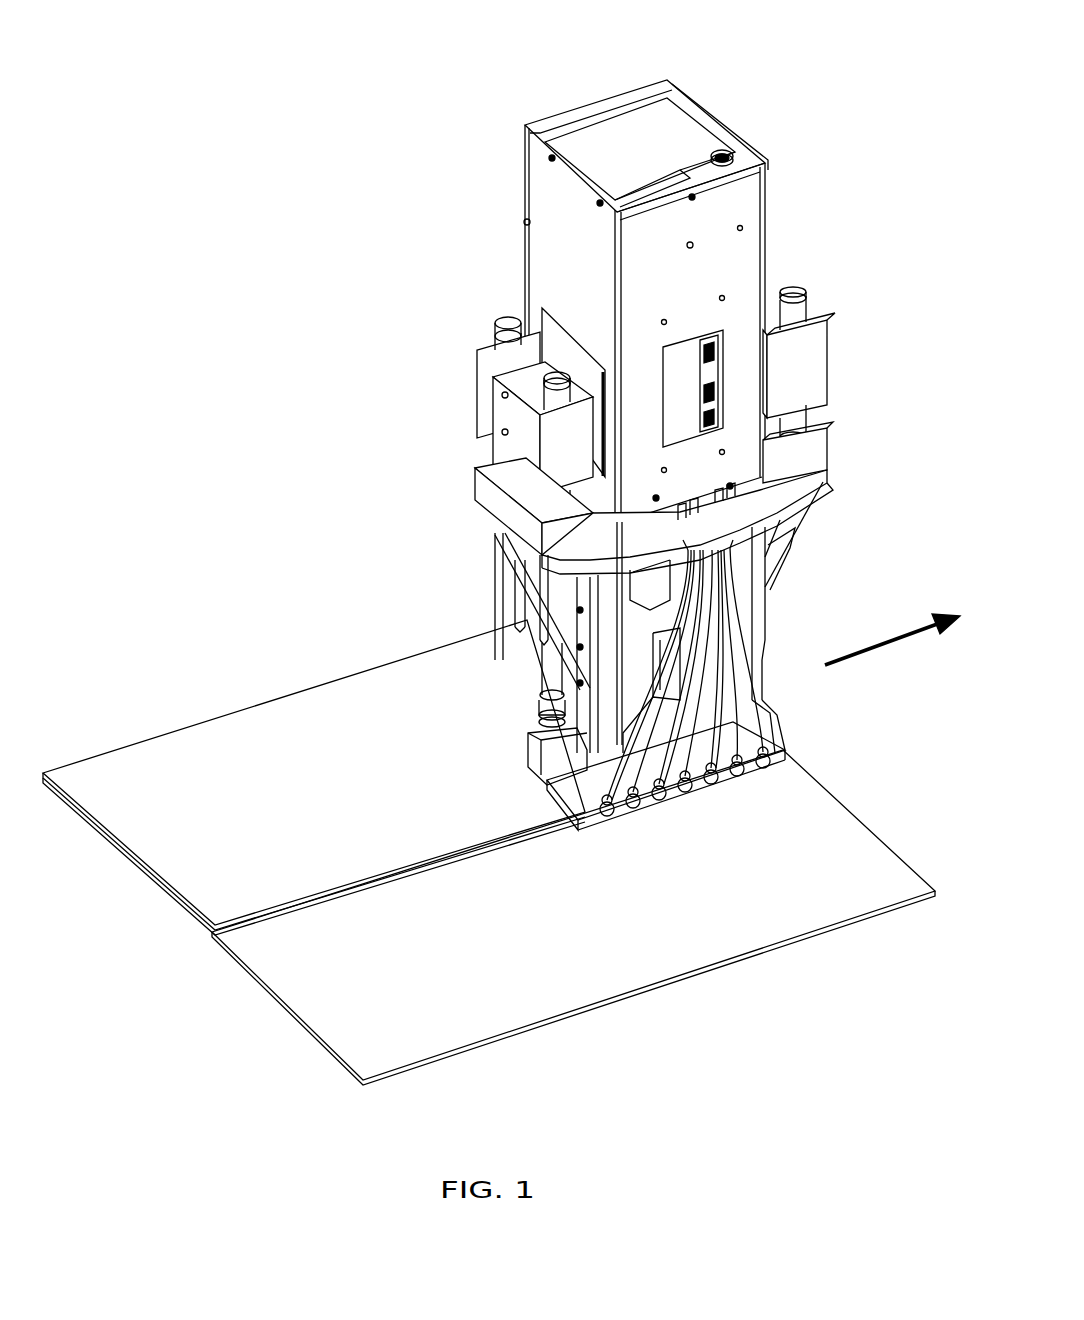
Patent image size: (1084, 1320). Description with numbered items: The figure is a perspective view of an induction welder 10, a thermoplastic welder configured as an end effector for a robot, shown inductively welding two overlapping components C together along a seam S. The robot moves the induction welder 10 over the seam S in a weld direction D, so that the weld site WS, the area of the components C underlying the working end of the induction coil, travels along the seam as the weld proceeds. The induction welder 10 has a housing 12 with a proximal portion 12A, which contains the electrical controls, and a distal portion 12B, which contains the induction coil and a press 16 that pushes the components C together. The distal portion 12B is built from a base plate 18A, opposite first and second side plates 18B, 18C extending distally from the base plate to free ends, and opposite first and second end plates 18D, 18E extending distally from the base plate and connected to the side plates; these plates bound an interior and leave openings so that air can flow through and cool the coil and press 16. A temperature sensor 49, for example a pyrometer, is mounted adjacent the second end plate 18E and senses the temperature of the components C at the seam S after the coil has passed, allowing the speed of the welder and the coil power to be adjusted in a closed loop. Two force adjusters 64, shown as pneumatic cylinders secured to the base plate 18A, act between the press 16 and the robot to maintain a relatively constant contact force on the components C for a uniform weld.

The induction welder 10 is at (438, 90).
The housing 12 is at (418, 297).
The proximal portion 12A is at (517, 203).
The distal portion 12B is at (482, 561).
The force adjuster 64 is at (478, 395).
The base plate 18A is at (755, 505).
The first side plate 18B is at (753, 725).
The second side plate 18C is at (543, 760).
The first end plate 18D is at (760, 588).
The second end plate 18E is at (578, 590).
The temperature sensor 49 is at (548, 715).
The weld site WS is at (548, 803).
The press 16 is at (705, 818).
The components C is at (215, 780).
The seam S is at (238, 945).
The weld direction D is at (892, 656).